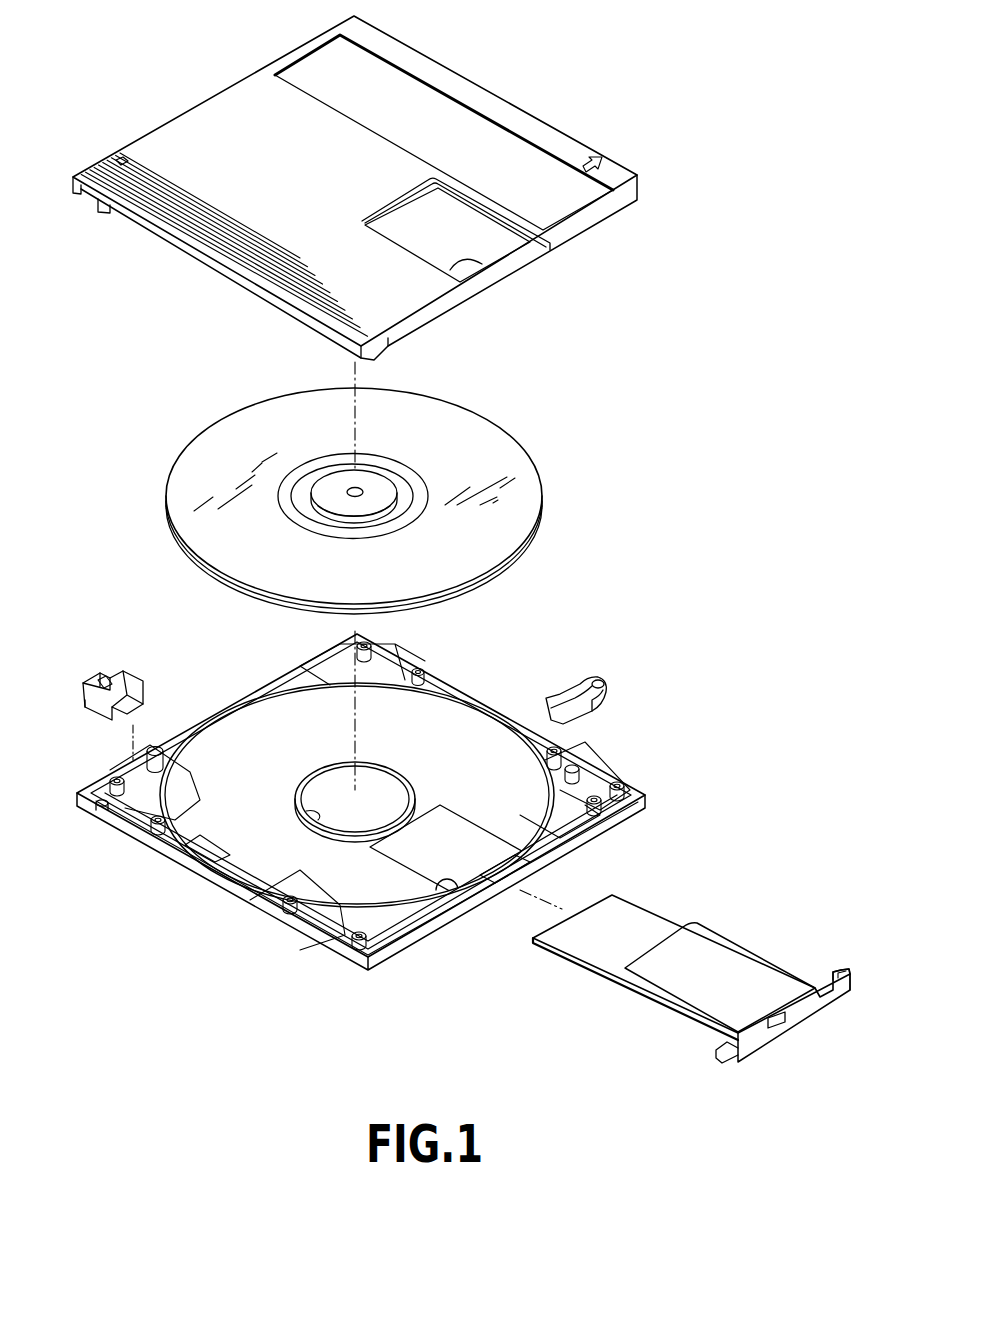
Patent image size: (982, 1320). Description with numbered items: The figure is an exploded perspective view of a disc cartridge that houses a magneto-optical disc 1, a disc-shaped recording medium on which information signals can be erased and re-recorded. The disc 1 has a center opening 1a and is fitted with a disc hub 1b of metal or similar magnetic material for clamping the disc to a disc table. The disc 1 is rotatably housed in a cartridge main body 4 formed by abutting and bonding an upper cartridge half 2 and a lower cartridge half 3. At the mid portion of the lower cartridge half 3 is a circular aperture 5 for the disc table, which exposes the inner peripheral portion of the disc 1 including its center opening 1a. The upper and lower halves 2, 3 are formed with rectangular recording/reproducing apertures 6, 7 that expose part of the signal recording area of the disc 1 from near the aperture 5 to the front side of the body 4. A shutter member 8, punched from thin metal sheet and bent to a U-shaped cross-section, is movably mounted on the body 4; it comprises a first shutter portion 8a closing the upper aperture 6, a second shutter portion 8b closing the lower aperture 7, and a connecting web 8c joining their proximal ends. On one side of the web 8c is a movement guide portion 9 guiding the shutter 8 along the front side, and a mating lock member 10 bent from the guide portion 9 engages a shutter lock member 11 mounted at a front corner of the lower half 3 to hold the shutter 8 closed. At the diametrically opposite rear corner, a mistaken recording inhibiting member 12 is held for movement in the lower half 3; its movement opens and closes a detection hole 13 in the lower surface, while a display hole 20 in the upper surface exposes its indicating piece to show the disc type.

The magneto-optical disc 1 is at (357, 501).
The center opening 1a is at (380, 503).
The disc hub 1b is at (335, 485).
The upper cartridge half 2 is at (355, 188).
The lower cartridge half 3 is at (350, 807).
The cartridge main body 4 is at (40, 749).
The aperture for the disc table 5 is at (315, 818).
The recording/reproducing aperture 6 is at (480, 262).
The recording/reproducing aperture 7 is at (451, 914).
The shutter member 8 is at (700, 977).
The first shutter portion 8a is at (690, 940).
The second shutter portion 8b is at (587, 952).
The connecting web 8c is at (757, 1040).
The movement guide portion 9 is at (833, 1000).
The mating lock member 10 is at (837, 970).
The shutter lock member 11 is at (577, 675).
The mistaken recording inhibiting member 12 is at (110, 673).
The detection hole 13 is at (98, 814).
The display hole 20 is at (119, 158).